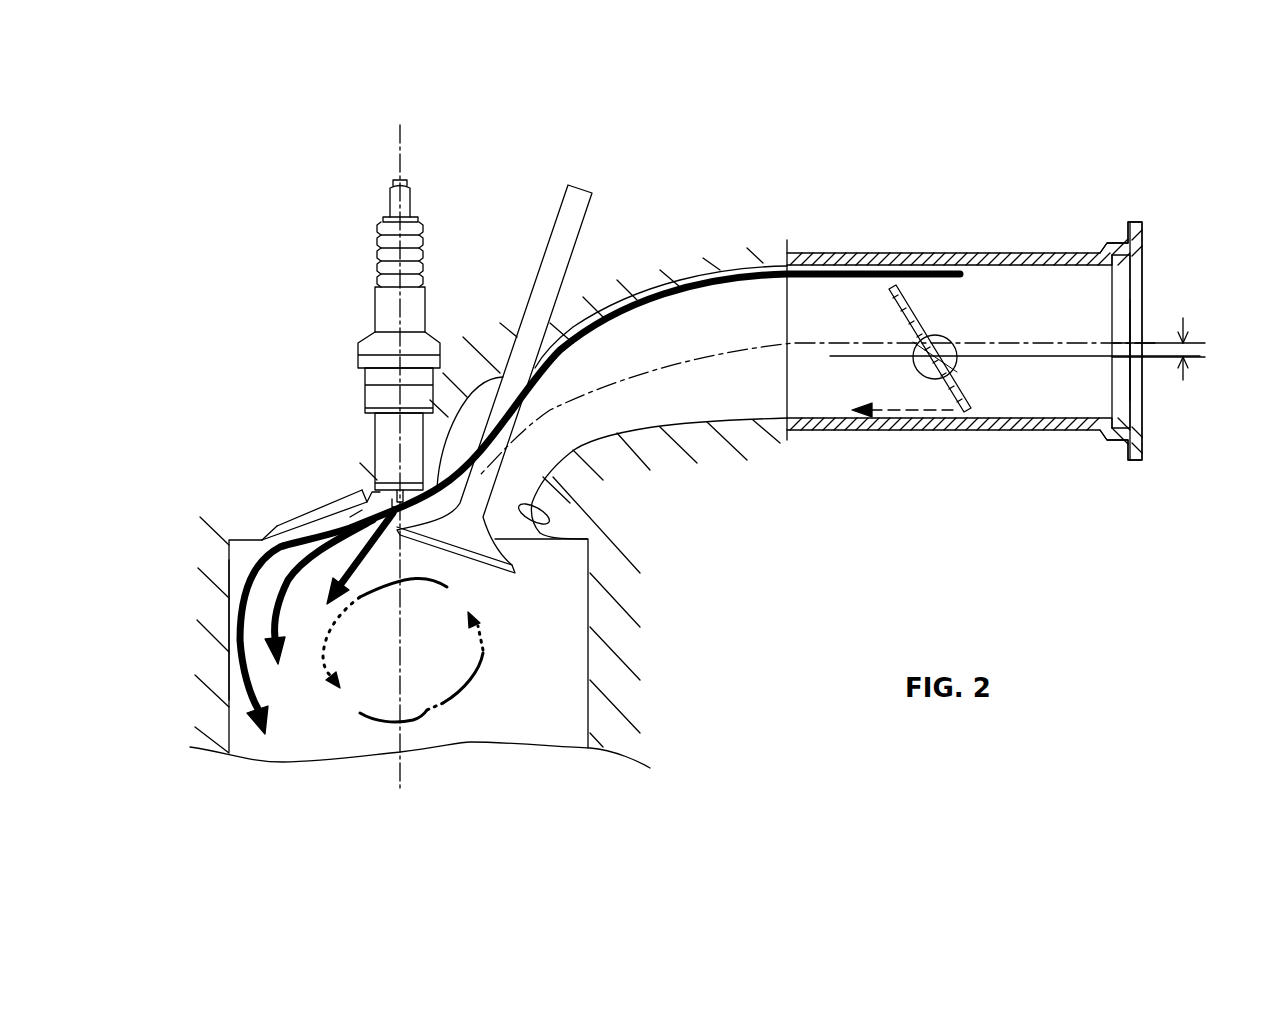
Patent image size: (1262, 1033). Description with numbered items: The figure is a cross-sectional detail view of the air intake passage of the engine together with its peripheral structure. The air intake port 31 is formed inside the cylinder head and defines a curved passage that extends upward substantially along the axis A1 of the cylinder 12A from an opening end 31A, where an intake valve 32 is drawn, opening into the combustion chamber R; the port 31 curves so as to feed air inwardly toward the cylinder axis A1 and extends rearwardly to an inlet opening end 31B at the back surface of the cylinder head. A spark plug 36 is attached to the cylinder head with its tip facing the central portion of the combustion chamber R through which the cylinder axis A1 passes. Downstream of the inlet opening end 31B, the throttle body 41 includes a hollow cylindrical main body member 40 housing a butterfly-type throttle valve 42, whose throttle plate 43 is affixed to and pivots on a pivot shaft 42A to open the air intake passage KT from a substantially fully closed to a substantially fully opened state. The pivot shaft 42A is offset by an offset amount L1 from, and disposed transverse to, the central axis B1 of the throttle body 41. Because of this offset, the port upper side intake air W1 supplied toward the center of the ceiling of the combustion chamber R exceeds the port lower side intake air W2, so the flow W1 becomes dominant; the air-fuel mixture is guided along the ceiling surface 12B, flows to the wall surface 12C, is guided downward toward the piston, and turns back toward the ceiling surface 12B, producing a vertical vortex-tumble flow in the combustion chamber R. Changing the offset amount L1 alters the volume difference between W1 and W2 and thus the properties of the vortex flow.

The cylinder 12A is at (578, 716).
The ceiling surface of the combustion chamber 12B is at (258, 528).
The wall surface of the combustion chamber 12C is at (227, 585).
The air intake port 31 is at (653, 397).
The opening end 31A is at (545, 510).
The inlet opening end 31B is at (767, 387).
The intake valve 32 is at (537, 272).
The spark plug 36 is at (388, 451).
The main body member 40 is at (993, 433).
The throttle body 41 is at (1087, 240).
The throttle valve 42 is at (941, 326).
The pivot shaft 42A is at (918, 373).
The throttle plate 43 is at (898, 310).
The axis of the cylinder A1 is at (403, 162).
The central axis of the throttle body B1 is at (1125, 343).
The air intake passage KT is at (1092, 334).
The offset amount L1 is at (1179, 349).
The combustion chamber R is at (350, 517).
The port upper side intake air W1 is at (766, 267).
The port lower side intake air W2 is at (887, 402).